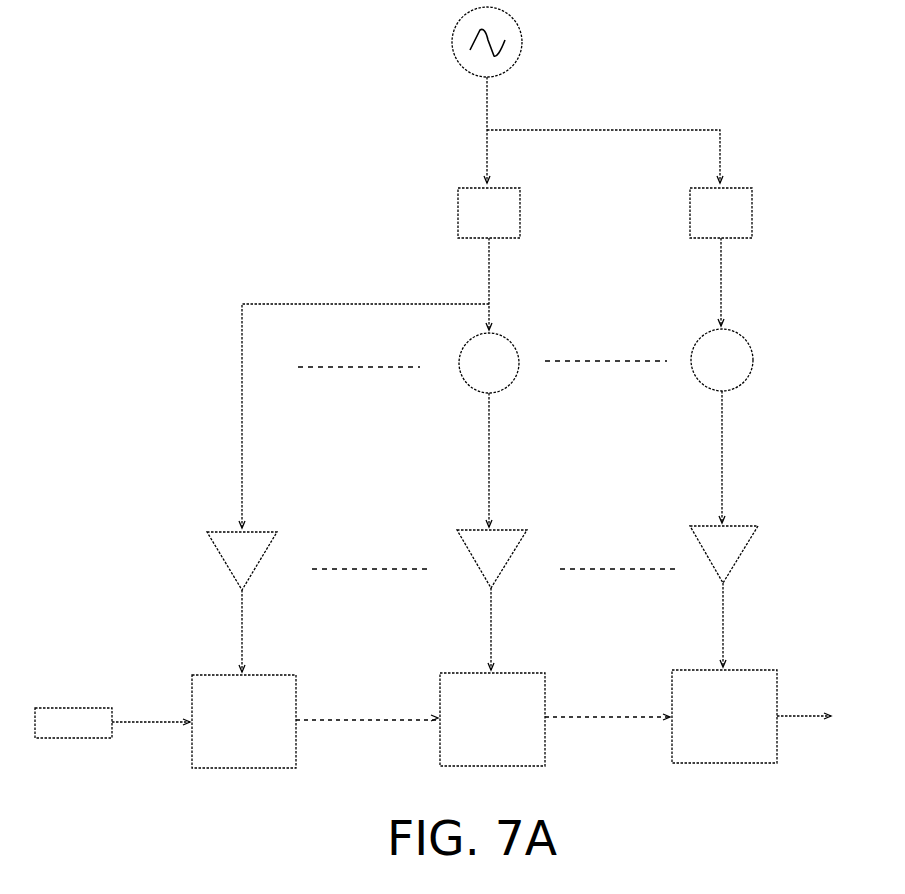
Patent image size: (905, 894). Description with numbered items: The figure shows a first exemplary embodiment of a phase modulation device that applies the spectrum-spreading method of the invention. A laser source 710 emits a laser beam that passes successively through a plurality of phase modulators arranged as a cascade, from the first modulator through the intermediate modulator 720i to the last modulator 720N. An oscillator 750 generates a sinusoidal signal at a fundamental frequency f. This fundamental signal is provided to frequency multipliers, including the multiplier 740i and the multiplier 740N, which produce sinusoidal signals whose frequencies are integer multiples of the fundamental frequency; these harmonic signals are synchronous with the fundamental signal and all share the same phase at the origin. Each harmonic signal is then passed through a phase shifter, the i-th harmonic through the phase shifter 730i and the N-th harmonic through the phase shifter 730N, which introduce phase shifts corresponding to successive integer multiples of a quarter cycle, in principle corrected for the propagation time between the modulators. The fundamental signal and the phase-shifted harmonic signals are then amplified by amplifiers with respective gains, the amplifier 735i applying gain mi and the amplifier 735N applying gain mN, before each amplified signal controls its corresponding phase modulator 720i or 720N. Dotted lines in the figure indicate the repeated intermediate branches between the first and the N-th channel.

The laser source 710 is at (52, 708).
The phase modulator 720i is at (492, 719).
The phase modulator 720N is at (724, 716).
The phase shifter 730i is at (462, 350).
The phase shifter 730N is at (694, 344).
The amplifier 735i is at (460, 538).
The amplifier 735N is at (694, 536).
The frequency multiplier 740i is at (458, 220).
The frequency multiplier 740N is at (690, 216).
The oscillator 750 is at (453, 50).